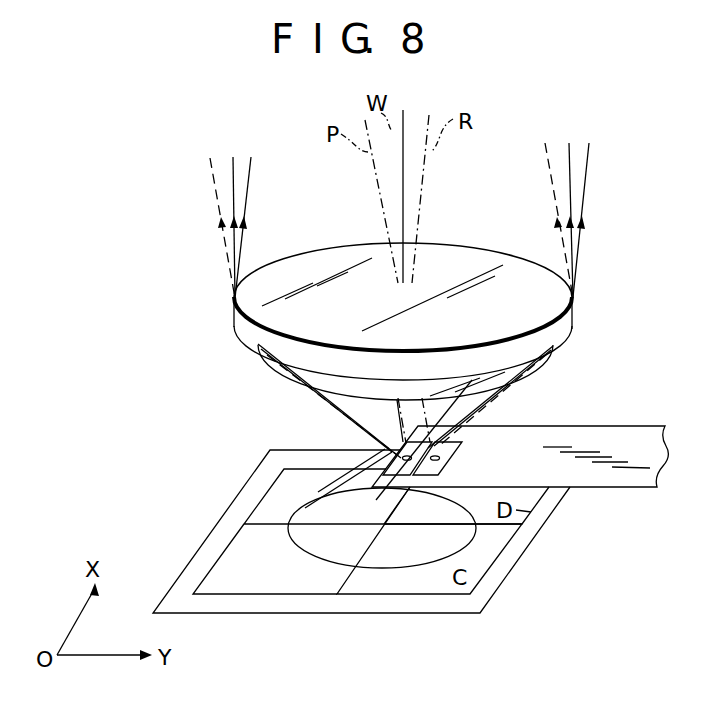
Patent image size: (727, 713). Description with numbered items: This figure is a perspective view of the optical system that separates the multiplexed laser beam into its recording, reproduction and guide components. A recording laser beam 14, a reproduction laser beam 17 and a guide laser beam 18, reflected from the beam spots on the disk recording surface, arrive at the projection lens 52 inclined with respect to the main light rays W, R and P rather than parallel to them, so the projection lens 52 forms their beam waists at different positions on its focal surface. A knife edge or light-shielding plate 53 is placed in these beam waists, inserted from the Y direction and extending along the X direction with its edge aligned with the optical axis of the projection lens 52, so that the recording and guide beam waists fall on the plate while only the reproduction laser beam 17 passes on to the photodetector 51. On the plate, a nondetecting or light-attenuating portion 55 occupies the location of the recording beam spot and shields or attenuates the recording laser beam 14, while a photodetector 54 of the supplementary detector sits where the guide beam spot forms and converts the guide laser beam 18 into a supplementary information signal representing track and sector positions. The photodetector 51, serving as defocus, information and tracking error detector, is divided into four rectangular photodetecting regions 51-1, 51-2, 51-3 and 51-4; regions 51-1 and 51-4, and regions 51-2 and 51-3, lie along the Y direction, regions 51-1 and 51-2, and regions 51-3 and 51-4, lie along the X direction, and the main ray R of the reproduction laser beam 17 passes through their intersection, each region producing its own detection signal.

The recording laser beam 14 is at (233, 183).
The reproduction laser beam 17 is at (250, 190).
The guide laser beam 18 is at (222, 238).
The photodetector 51 is at (510, 575).
The first photodetecting region 51-1 is at (278, 490).
The second photodetecting region 51-2 is at (230, 555).
The third photodetecting region 51-3 is at (456, 588).
The fourth photodetecting region 51-4 is at (548, 513).
The projection lens 52 is at (468, 258).
The knife edge or light-shielding plate 53 is at (643, 487).
The photodetector of the supplementary detector 54 is at (463, 449).
The nondetecting portion or light-attenuating portion 55 is at (391, 479).